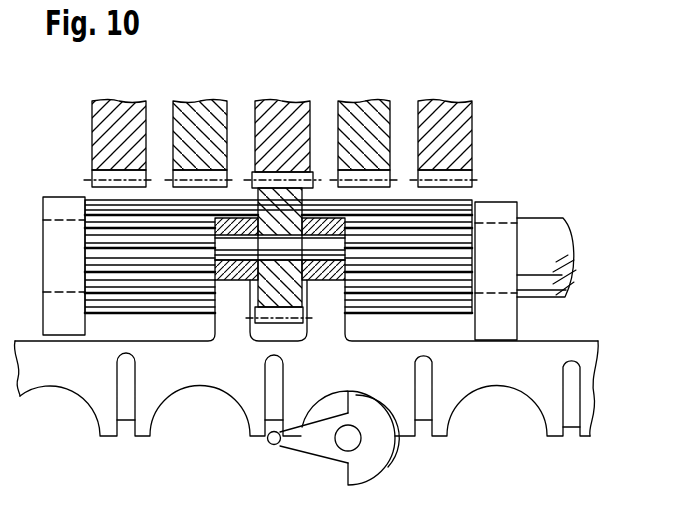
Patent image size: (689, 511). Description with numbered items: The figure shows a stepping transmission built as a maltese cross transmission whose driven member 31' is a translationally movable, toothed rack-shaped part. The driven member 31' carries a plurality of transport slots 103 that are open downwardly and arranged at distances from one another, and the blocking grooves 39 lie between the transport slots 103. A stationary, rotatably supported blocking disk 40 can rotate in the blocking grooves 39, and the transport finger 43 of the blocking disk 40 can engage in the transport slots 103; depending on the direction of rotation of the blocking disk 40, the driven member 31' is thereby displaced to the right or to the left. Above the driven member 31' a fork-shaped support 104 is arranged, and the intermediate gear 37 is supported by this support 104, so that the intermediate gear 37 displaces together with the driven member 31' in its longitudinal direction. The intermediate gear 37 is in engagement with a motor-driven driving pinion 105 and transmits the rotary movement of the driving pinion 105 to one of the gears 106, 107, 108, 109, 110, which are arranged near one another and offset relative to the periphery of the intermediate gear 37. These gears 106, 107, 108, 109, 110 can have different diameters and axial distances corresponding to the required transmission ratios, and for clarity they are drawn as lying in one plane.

The driven member 31' is at (324, 358).
The intermediate gear 37 is at (280, 292).
The blocking grooves 39 is at (47, 386).
The blocking disk 40 is at (377, 458).
The transport finger 43 is at (273, 446).
The transport slots 103 is at (126, 428).
The fork-shaped support 104 is at (230, 292).
The driving pinion 105 is at (452, 222).
The gear 106 is at (120, 115).
The gear 107 is at (197, 115).
The gear 108 is at (277, 118).
The gear 109 is at (365, 118).
The gear 110 is at (445, 118).